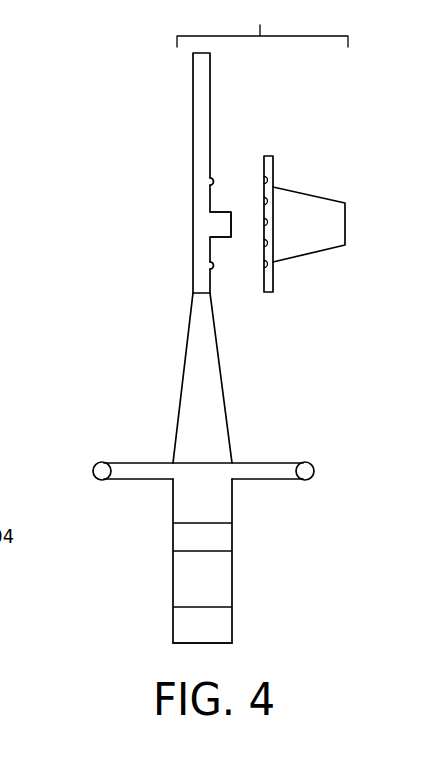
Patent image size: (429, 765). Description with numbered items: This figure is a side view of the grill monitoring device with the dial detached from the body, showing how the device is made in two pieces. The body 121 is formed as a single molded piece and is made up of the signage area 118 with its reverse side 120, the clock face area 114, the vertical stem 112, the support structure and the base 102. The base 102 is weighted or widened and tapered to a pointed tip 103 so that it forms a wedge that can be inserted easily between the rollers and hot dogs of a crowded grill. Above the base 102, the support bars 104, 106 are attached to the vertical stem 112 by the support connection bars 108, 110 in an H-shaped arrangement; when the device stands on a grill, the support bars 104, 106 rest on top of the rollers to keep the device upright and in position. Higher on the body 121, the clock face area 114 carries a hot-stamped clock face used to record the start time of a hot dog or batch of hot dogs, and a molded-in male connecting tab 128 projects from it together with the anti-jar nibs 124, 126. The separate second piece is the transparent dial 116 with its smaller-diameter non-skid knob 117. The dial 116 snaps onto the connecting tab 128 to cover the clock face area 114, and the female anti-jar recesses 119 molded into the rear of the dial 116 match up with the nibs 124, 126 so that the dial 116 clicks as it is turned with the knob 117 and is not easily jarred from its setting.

The base 102 is at (222, 600).
The pointed tip 103 is at (203, 643).
The support bar 104 is at (103, 462).
The support bar 106 is at (306, 464).
The support connection bar 108 is at (150, 472).
The support connection bar 110 is at (263, 472).
The vertical stem 112 is at (195, 380).
The clock face area 114 is at (222, 196).
The dial 116 is at (273, 280).
The knob 117 is at (345, 223).
The signage area 118 is at (210, 81).
The anti-jar recesses 119 is at (266, 266).
The reverse side of signage area 120 is at (193, 110).
The body 121 is at (128, 570).
The anti-jar nib 124 is at (212, 270).
The anti-jar nib 126 is at (213, 182).
The connecting tab 128 is at (222, 213).